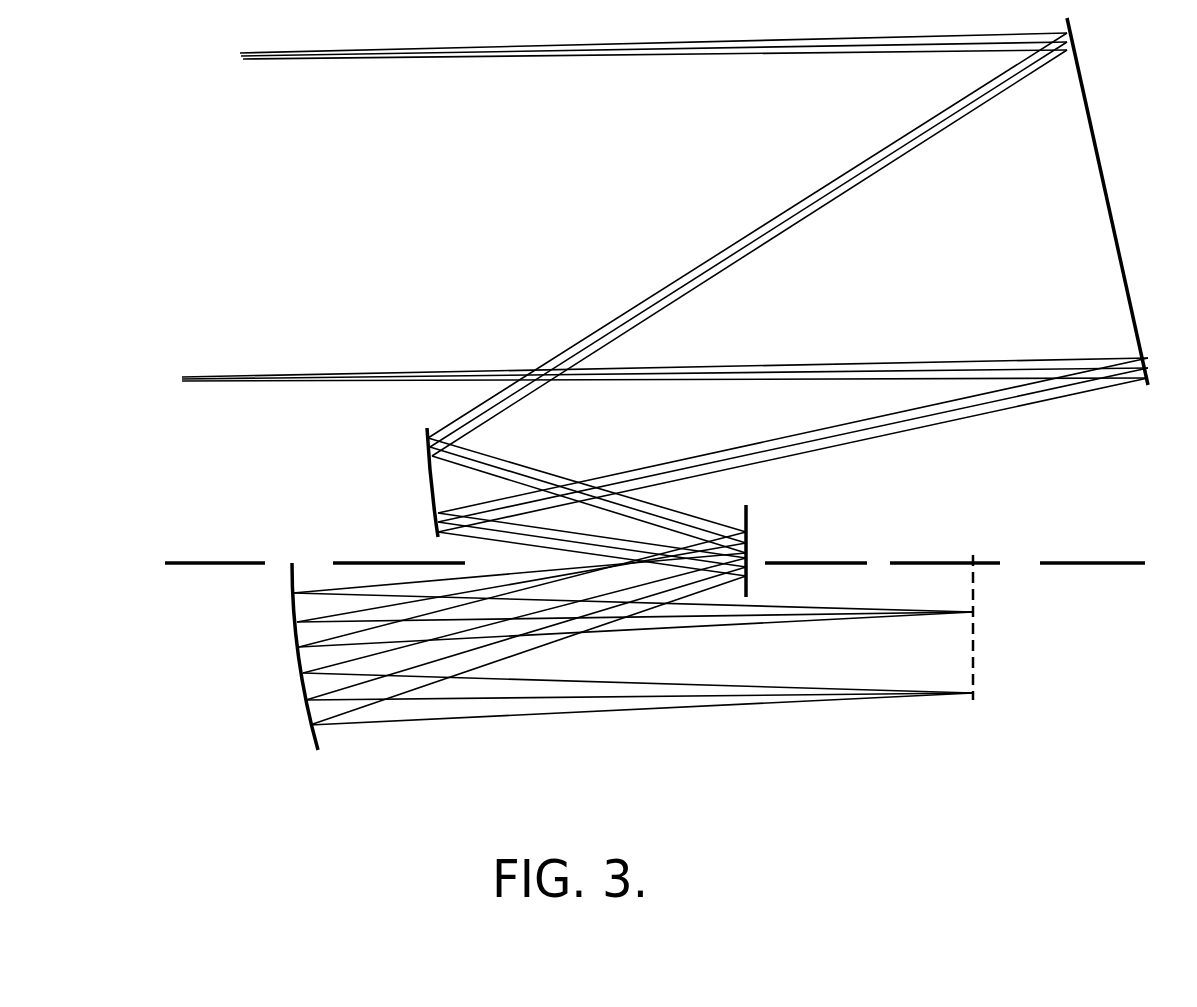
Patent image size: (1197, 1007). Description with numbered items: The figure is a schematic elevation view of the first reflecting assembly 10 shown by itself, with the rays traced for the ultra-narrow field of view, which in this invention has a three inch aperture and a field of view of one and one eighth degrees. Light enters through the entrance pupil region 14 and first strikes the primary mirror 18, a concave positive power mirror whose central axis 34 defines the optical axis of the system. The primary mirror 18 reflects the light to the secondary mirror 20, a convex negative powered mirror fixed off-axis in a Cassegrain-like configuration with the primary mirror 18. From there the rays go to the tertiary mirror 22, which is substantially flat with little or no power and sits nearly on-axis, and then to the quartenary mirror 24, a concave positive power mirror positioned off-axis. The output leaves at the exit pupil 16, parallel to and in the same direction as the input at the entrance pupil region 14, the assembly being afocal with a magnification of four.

The first reflecting assembly 10 is at (225, 475).
The entrance pupil region 14 is at (432, 224).
The exit pupil 16 is at (975, 655).
The primary mirror 18 is at (1093, 103).
The secondary mirror 20 is at (435, 486).
The tertiary mirror 22 is at (748, 523).
The quartenary mirror 24 is at (307, 713).
The central axis 34 is at (218, 567).